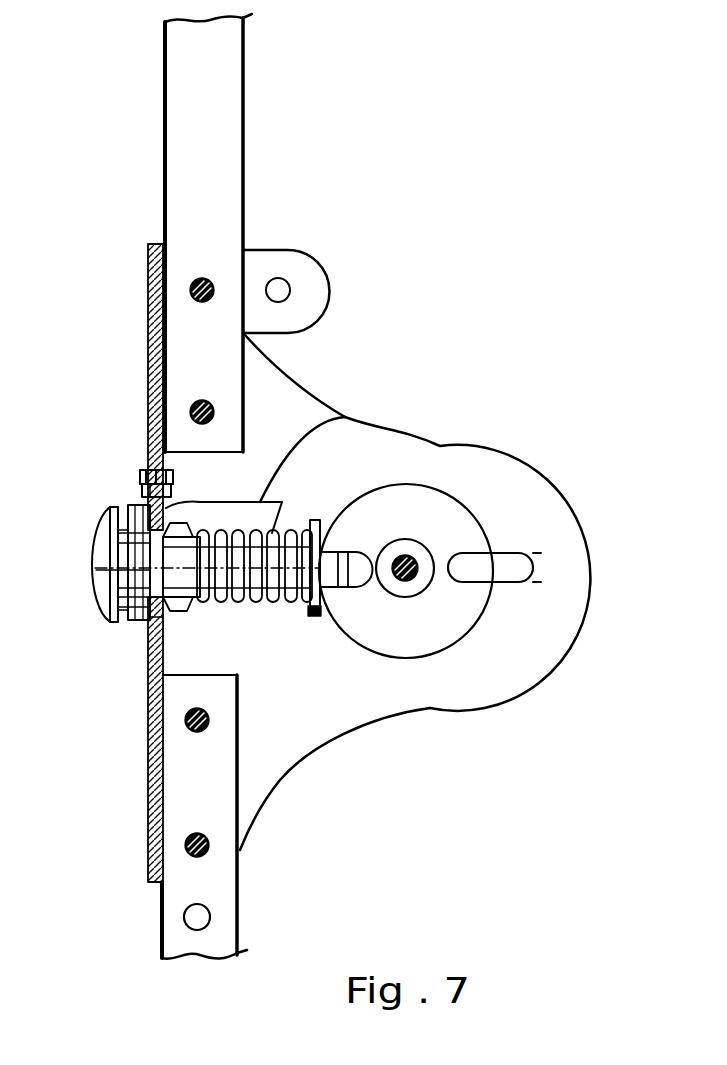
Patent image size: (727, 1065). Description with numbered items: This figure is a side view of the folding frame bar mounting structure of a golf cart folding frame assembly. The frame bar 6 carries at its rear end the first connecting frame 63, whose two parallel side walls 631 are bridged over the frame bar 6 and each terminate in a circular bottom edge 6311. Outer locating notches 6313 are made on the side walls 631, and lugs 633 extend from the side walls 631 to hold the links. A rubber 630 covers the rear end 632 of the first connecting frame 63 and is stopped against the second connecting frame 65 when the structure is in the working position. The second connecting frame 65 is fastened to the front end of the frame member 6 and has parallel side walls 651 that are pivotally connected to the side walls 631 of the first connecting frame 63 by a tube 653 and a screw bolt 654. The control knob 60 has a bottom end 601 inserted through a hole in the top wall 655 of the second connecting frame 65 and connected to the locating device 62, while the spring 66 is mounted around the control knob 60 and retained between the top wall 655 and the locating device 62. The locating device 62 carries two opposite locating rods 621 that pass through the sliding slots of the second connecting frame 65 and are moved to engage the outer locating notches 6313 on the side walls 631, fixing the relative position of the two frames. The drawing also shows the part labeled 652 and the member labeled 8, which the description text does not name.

The frame bar 6 is at (159, 158).
The lug 633 is at (297, 262).
The first connecting frame 63 is at (152, 345).
The rear end 632 is at (146, 470).
The rubber 630 is at (146, 490).
The guide plate 652 is at (224, 501).
The bottom end 601 is at (293, 545).
The locating rod 621 is at (338, 557).
The screw bolt 654 is at (405, 558).
The outer locating notch 6313 is at (460, 565).
The side wall 631 is at (526, 519).
The locating device 62 is at (350, 588).
The tube 653 is at (408, 598).
The circular bottom edge 6311 is at (436, 656).
The side wall 651 is at (403, 712).
The spring 66 is at (215, 600).
The control knob 60 is at (96, 610).
The top wall 655 is at (150, 636).
The second connecting frame 65 is at (150, 744).
The lower post 8 is at (158, 914).